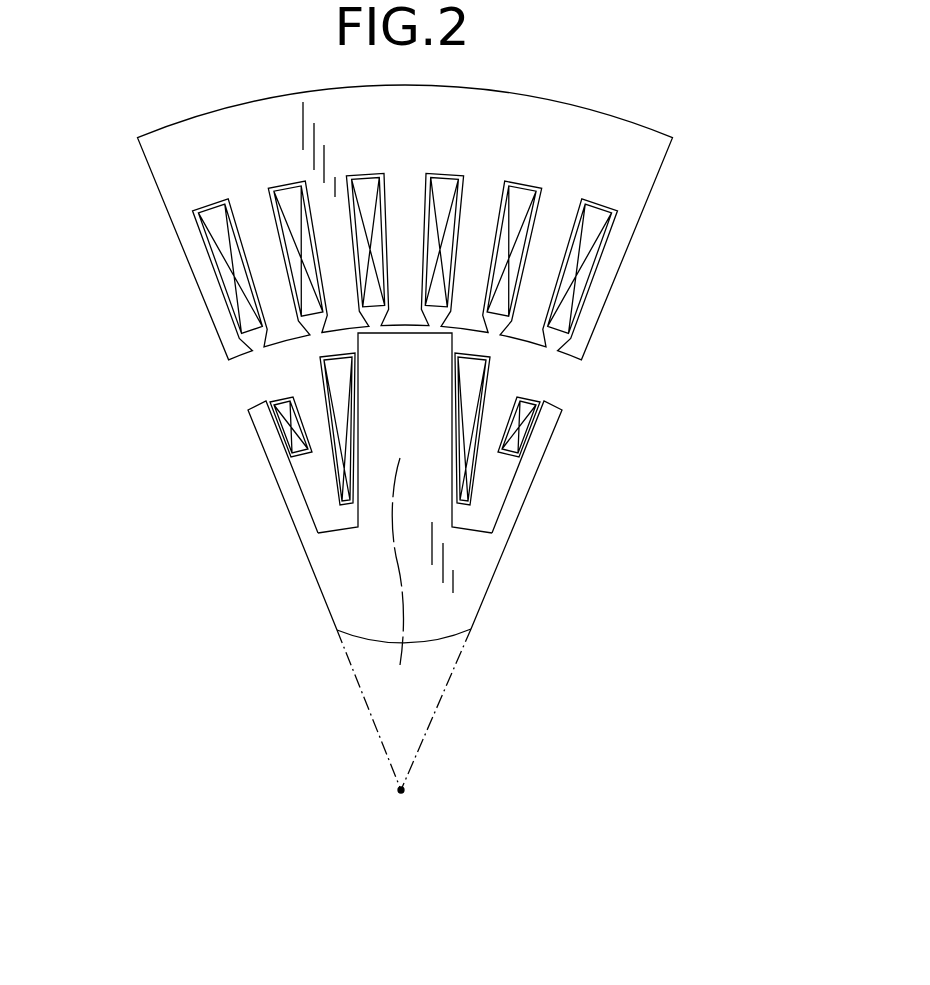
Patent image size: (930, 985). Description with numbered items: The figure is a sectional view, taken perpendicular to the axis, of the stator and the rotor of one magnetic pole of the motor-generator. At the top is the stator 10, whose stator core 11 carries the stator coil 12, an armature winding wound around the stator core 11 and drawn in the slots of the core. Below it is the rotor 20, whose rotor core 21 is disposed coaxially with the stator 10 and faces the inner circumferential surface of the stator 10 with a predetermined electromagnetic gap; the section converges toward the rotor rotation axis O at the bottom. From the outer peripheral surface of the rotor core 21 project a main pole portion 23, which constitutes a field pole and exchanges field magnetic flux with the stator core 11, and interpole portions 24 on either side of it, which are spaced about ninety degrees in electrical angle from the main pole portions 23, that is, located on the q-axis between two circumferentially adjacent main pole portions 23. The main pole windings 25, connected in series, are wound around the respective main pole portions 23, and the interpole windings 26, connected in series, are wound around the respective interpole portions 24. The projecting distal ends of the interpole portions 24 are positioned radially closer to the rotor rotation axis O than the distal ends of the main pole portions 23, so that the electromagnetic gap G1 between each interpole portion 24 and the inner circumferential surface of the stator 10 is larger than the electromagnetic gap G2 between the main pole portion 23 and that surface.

The stator 10 is at (651, 211).
The stator core 11 is at (187, 181).
The stator coil 12 is at (230, 267).
The rotor 20 is at (409, 561).
The rotor core 21 is at (345, 575).
The main pole portion 23 is at (400, 572).
The interpole portion 24 is at (283, 482).
The main pole winding 25 is at (337, 472).
The interpole winding 26 is at (286, 428).
The electromagnetic gap G1 is at (586, 363).
The electromagnetic gap G2 is at (405, 293).
The rotor rotation axis O is at (397, 811).